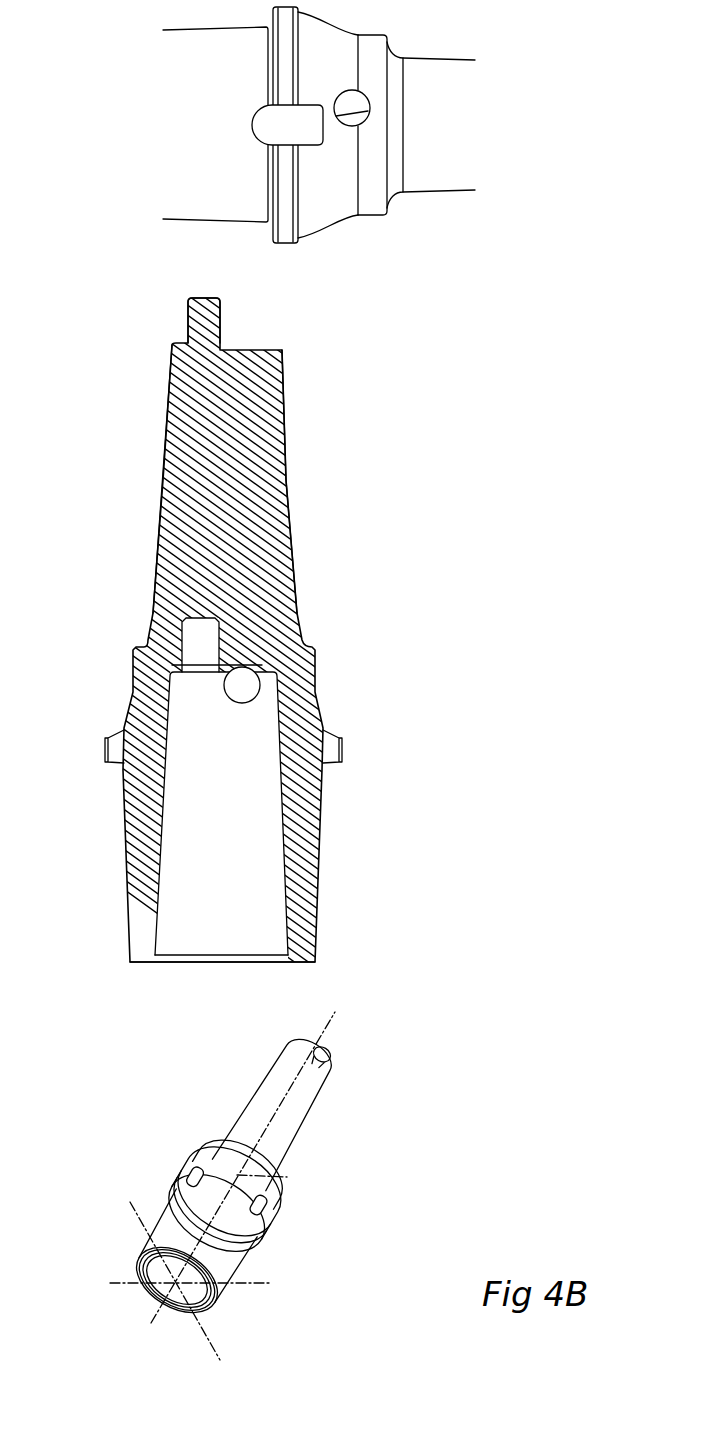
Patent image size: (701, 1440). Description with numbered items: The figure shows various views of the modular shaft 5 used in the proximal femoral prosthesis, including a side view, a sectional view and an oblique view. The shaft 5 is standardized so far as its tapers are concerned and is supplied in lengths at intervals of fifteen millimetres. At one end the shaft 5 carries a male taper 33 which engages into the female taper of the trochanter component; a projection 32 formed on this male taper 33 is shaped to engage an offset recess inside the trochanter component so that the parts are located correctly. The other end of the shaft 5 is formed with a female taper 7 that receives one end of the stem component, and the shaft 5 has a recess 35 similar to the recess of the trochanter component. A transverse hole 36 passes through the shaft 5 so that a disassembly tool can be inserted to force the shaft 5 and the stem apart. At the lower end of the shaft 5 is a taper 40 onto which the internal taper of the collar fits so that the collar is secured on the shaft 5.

The shaft 5 is at (160, 568).
The female taper 7 is at (287, 808).
The projection 32 is at (220, 308).
The male taper 33 is at (284, 462).
The recess 35 is at (218, 650).
The transverse hole 36 is at (258, 698).
The taper 40 is at (317, 935).